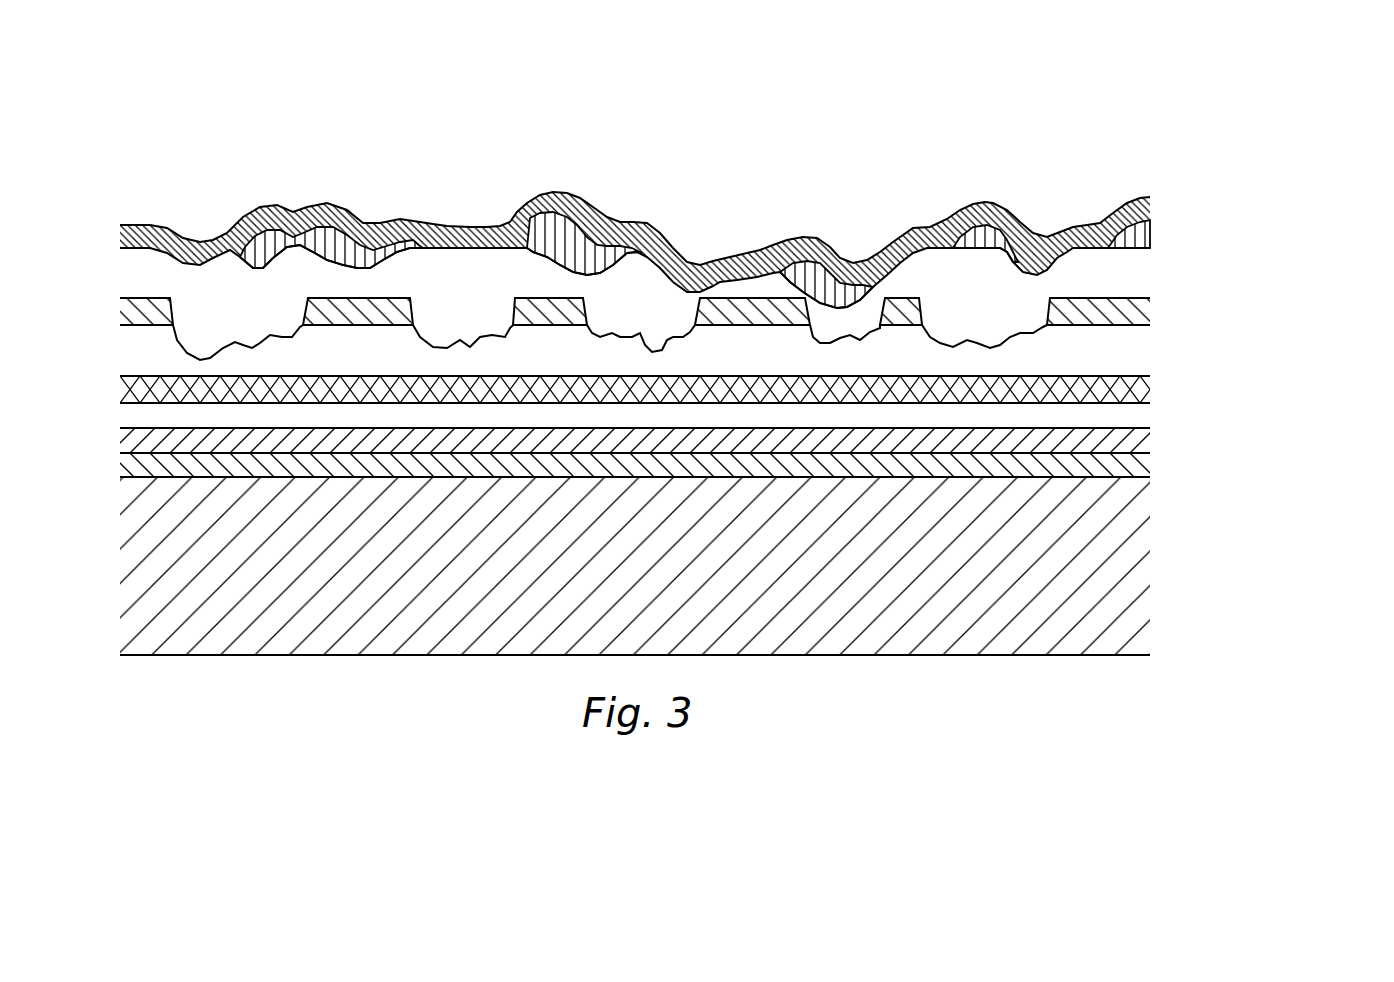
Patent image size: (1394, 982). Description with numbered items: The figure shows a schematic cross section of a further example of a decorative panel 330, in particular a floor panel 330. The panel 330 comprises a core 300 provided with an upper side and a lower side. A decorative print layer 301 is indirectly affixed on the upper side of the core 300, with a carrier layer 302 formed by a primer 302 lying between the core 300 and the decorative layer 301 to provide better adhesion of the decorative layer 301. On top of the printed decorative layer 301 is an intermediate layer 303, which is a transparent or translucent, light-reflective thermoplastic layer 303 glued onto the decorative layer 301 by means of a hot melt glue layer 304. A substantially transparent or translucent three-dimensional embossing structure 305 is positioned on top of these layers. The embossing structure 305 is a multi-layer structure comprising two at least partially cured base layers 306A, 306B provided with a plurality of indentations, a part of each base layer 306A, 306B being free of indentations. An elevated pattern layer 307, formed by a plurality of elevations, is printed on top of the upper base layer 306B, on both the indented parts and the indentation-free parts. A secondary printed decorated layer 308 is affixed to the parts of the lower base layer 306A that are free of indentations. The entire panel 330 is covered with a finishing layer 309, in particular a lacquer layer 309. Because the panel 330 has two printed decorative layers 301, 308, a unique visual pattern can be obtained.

The core 300 is at (1138, 558).
The decorative print layer 301 is at (1138, 440).
The carrier layer 302 is at (1138, 465).
The intermediate layer 303 is at (1150, 384).
The hot melt glue layer 304 is at (1138, 415).
The three-dimensional embossing structure 305 is at (1275, 158).
The lower base layer 306A is at (1138, 352).
The upper base layer 306B is at (1138, 275).
The elevated pattern layer 307 is at (582, 243).
The secondary printed decorated layer 308 is at (1150, 316).
The finishing layer 309 is at (1150, 208).
The decorative panel 330 is at (174, 162).